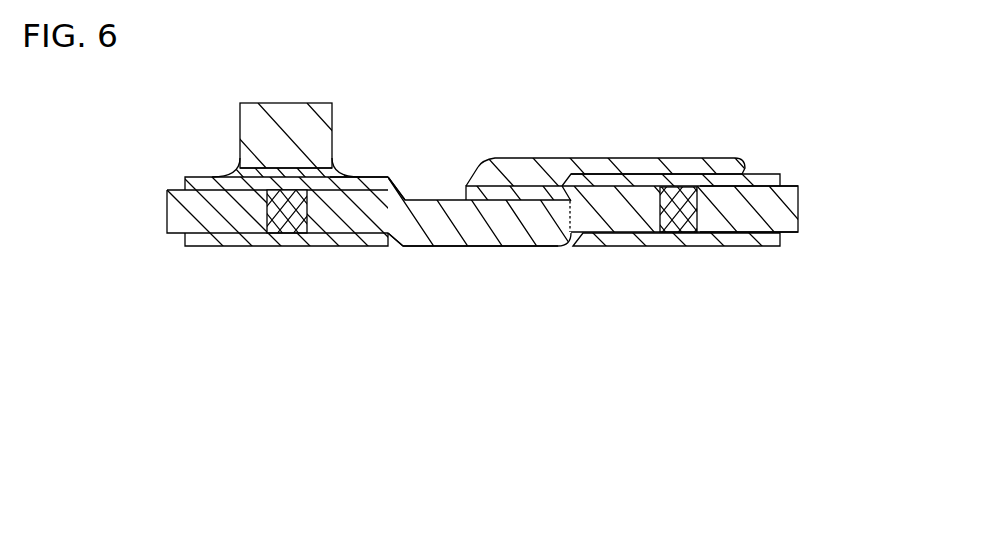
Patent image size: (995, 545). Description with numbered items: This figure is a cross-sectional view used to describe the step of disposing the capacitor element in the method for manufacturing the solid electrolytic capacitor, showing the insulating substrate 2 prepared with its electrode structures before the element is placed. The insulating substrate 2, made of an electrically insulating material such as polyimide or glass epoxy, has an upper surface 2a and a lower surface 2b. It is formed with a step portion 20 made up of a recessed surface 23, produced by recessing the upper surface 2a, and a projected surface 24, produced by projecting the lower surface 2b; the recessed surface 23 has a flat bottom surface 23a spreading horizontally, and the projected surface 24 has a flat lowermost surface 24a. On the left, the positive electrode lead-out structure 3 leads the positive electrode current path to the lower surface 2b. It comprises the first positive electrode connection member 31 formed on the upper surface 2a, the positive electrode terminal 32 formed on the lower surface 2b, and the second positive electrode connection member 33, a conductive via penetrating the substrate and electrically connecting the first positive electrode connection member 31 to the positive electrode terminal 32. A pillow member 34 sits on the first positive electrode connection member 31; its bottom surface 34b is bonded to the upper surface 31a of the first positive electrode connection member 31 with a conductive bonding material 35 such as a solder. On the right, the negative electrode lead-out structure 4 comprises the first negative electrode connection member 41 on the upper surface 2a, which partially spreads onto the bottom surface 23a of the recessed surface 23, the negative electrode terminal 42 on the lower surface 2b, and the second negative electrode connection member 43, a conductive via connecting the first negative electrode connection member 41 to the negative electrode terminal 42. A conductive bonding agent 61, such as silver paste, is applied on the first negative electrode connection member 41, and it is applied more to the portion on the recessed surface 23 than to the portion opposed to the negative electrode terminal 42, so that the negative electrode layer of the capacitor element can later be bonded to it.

The insulating substrate 2 is at (715, 255).
The upper surface 2a is at (798, 176).
The lower surface 2b is at (800, 243).
The positive electrode lead-out structure 3 is at (245, 181).
The negative electrode lead-out structure 4 is at (686, 267).
The first negative electrode connection member 41 is at (763, 186).
The negative electrode terminal 42 is at (738, 230).
The second negative electrode connection member 43 is at (676, 277).
The step portion 20 is at (489, 228).
The recessed surface 23 is at (402, 195).
The bottom surface 23a is at (457, 190).
The projected surface 24 is at (393, 246).
The lowermost surface 24a is at (440, 248).
The first positive electrode connection member 31 is at (215, 181).
The upper surface 31a is at (375, 173).
The positive electrode terminal 32 is at (244, 249).
The second positive electrode connection member 33 is at (220, 205).
The pillow member 34 is at (253, 129).
The bottom surface 34b is at (336, 166).
The conductive bonding material 35 is at (235, 165).
The conductive bonding agent 61 is at (607, 166).